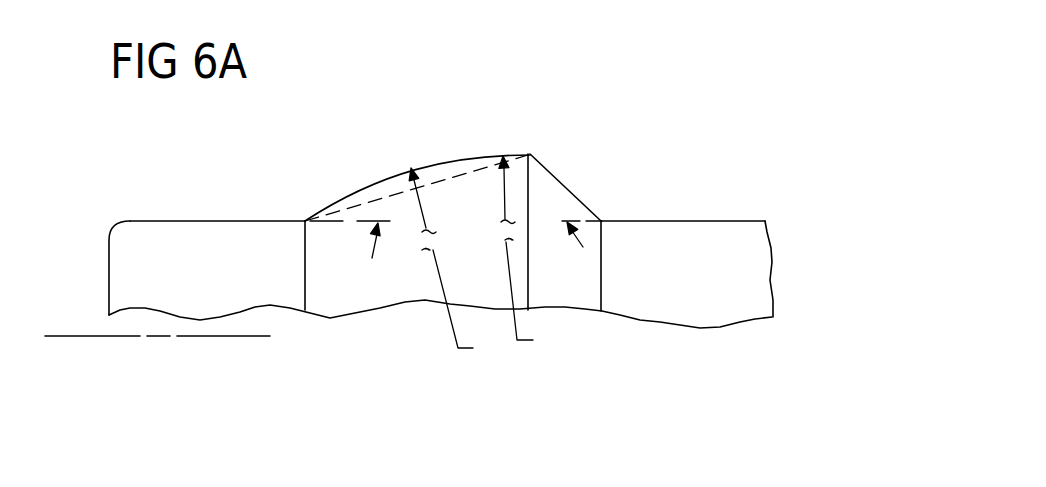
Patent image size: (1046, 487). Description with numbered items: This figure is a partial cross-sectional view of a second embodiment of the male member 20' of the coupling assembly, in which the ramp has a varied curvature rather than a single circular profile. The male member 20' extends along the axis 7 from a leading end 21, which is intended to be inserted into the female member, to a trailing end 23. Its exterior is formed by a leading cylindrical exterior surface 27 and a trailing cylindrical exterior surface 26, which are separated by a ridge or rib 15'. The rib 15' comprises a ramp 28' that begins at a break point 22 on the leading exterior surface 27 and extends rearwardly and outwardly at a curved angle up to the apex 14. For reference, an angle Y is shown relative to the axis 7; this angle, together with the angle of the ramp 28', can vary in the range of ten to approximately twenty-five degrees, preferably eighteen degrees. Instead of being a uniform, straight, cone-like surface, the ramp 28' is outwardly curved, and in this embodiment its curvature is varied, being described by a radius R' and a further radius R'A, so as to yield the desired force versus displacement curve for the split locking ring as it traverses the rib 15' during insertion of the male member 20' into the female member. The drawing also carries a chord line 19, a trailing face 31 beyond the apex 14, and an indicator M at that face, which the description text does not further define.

The axis 7 is at (105, 338).
The apex 14 is at (530, 153).
The rib 15' is at (417, 138).
The chord line 19 is at (437, 157).
The male member 20' is at (529, 183).
The leading end 21 is at (109, 258).
The break point 22 is at (301, 212).
The trailing end 23 is at (788, 272).
The trailing cylindrical exterior surface 26 is at (722, 221).
The leading cylindrical exterior surface 27 is at (210, 221).
The ramp 28' is at (417, 156).
The trailing face of ramp 31 is at (562, 178).
The slope angle of trailing face M is at (589, 192).
The angle Y is at (372, 190).
The radius R' is at (457, 267).
The radius R'A is at (534, 256).